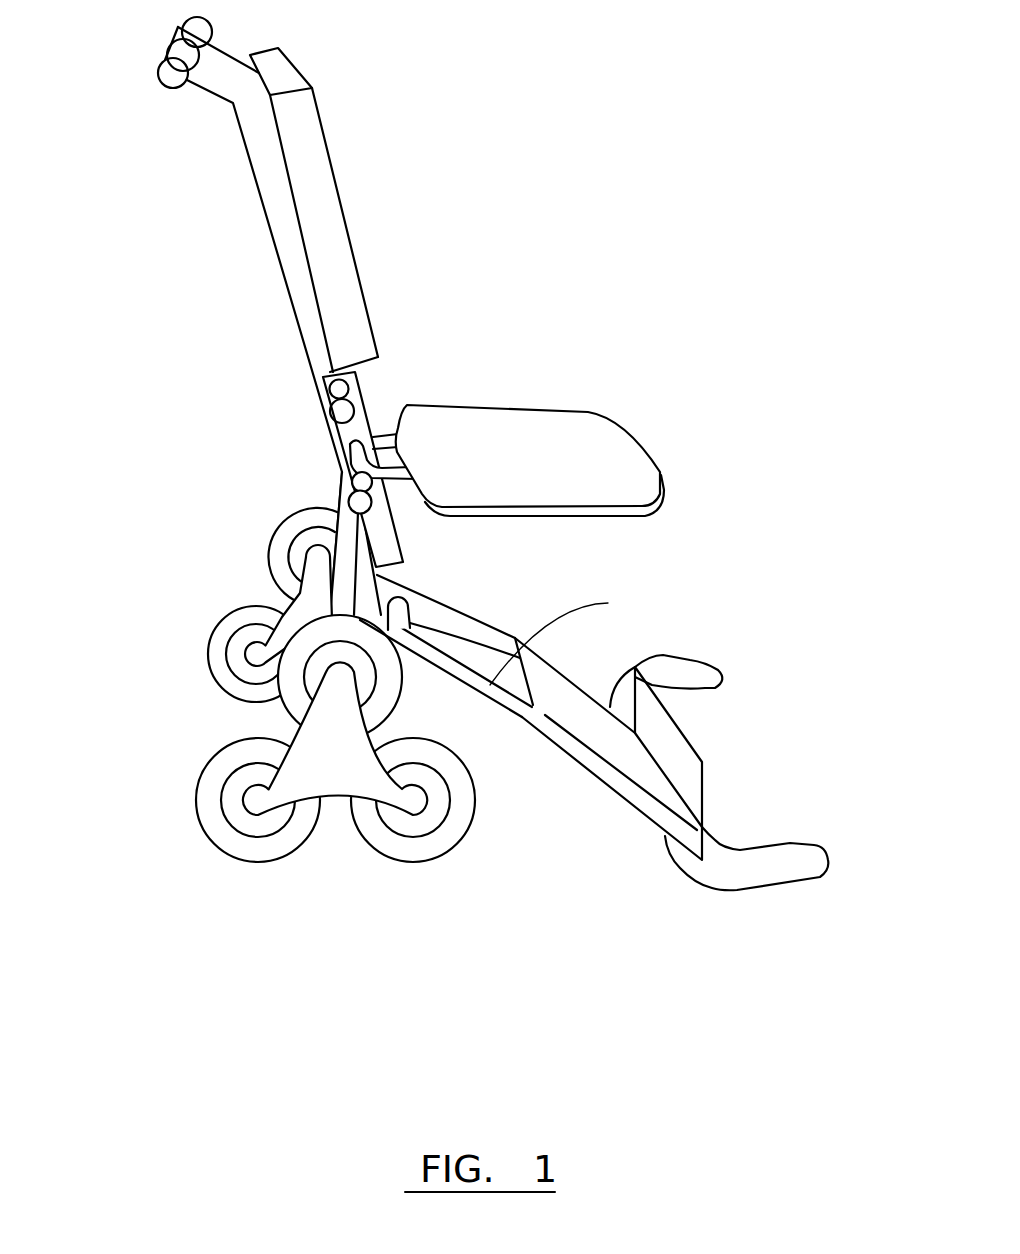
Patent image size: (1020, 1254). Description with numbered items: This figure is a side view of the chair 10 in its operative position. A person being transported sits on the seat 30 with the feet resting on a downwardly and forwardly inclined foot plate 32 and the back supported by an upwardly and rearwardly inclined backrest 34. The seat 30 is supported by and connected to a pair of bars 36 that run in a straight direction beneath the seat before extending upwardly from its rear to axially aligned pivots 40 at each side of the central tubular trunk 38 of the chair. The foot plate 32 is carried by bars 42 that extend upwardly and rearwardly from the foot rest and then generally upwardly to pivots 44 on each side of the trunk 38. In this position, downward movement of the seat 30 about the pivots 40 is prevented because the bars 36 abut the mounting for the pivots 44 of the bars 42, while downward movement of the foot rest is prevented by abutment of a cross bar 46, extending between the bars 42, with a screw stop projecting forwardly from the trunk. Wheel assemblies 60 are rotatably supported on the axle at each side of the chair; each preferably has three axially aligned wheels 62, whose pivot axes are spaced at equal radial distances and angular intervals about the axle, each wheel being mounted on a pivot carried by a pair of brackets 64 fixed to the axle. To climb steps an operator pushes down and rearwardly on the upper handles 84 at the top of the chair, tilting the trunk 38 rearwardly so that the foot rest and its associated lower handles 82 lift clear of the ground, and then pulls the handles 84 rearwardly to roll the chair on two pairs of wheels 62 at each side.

The chair 10 is at (610, 356).
The seat 30 is at (613, 453).
The foot plate 32 is at (578, 715).
The backrest 34 is at (340, 193).
The bars 36 is at (537, 280).
The central tubular trunk 38 is at (270, 232).
The pivots 40 is at (336, 391).
The bars 42 is at (470, 632).
The pivots 44 is at (360, 501).
The cross bar 46 is at (403, 607).
The wheel assemblies 60 is at (180, 838).
The wheels 62 is at (248, 825).
The brackets 64 is at (335, 758).
The lower handles 82 is at (690, 673).
The upper handles 84 is at (167, 77).